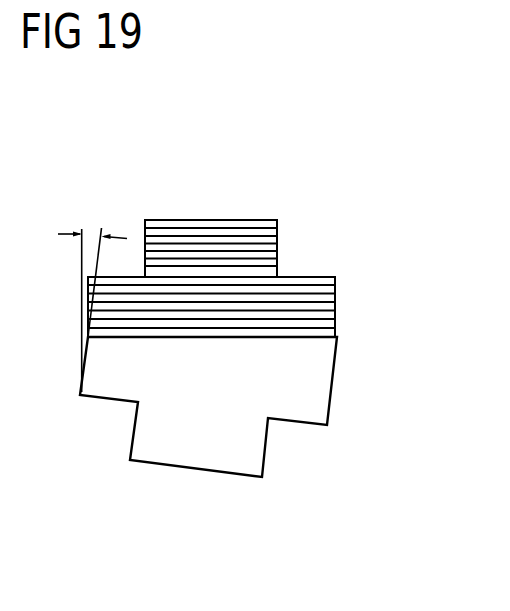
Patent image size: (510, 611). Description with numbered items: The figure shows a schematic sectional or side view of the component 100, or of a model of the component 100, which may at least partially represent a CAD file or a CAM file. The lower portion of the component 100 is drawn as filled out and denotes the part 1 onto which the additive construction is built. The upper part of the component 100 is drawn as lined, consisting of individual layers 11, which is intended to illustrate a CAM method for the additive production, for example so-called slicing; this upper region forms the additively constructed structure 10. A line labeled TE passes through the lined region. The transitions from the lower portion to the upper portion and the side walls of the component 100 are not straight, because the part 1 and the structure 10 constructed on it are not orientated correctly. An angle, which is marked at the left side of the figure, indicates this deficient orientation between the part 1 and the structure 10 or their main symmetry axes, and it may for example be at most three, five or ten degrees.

The component 100 is at (294, 199).
The structure 10 is at (212, 242).
The layers 11 is at (335, 288).
The separating plane TE is at (277, 338).
The part 1 is at (318, 383).